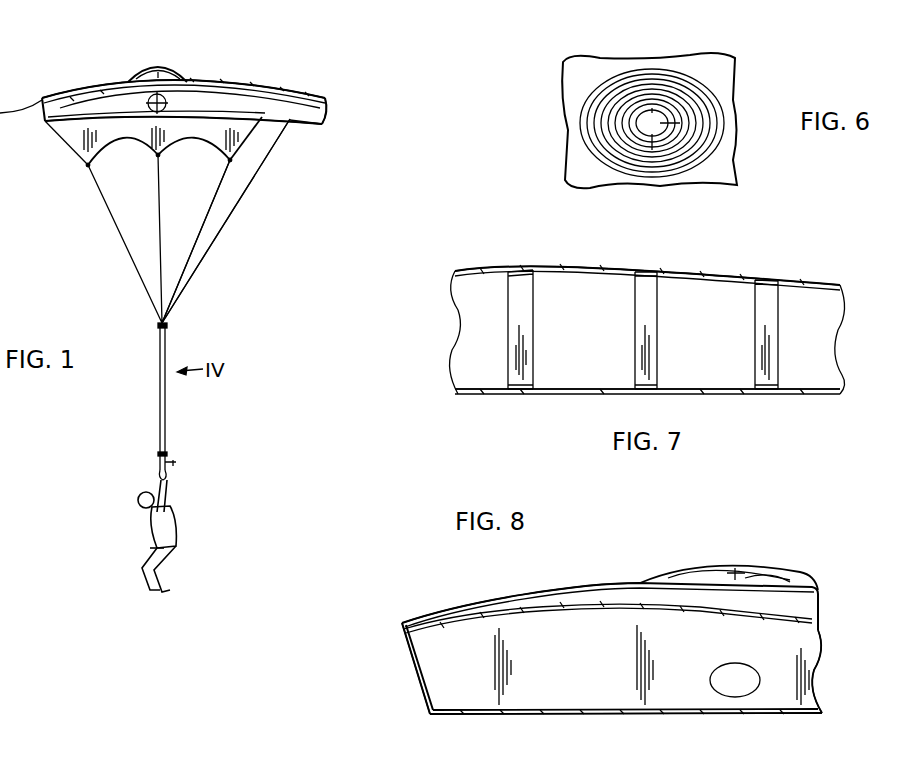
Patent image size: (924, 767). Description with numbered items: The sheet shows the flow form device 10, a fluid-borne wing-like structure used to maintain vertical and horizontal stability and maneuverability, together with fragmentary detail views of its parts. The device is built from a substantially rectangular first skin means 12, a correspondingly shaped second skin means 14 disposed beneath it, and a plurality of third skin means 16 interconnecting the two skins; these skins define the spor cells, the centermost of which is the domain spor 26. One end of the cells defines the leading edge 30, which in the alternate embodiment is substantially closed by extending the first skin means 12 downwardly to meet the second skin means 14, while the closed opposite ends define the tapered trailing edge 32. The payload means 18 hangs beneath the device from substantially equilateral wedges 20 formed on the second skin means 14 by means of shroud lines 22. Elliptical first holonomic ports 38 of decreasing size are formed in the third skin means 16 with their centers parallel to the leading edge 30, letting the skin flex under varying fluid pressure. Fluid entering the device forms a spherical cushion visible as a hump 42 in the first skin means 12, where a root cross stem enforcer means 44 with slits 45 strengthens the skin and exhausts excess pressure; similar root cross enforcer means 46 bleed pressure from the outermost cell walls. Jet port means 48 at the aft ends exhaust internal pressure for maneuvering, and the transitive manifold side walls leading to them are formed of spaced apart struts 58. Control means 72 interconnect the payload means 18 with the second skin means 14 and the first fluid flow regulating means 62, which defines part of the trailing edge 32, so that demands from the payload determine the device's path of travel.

In FIG. 1, the flow form device 10 is at (236, 64).
In FIG. 8, the flow form device 10 is at (628, 568).
In FIG. 1, the first skin means 12 is at (78, 85).
In FIG. 7, the first skin means 12 is at (600, 266).
In FIG. 8, the first skin means 12 is at (503, 600).
In FIG. 1, the second skin means 14 is at (65, 120).
In FIG. 7, the second skin means 14 is at (535, 395).
In FIG. 8, the second skin means 14 is at (604, 715).
In FIG. 6, the third skin means 16 is at (570, 83).
In FIG. 8, the third skin means 16 is at (790, 647).
In FIG. 1, the payload means 18 is at (167, 422).
In FIG. 1, the equilateral wedges 20 is at (146, 138).
In FIG. 1, the shroud lines 22 is at (143, 197).
In FIG. 7, the domain spor 26 is at (480, 310).
In FIG. 8, the leading edge 30 is at (410, 658).
In FIG. 1, the trailing edge 32 is at (324, 123).
In FIG. 6, the first holonomic ports 38 is at (580, 140).
In FIG. 8, the first holonomic ports 38 is at (730, 668).
In FIG. 1, the hump 42 is at (167, 70).
In FIG. 8, the hump 42 is at (672, 578).
In FIG. 8, the root cross stem enforcer means 44 is at (717, 570).
In FIG. 8, the slits 45 is at (745, 578).
In FIG. 1, the root cross enforcer means 46 is at (147, 103).
In FIG. 1, the jet port means 48 is at (327, 103).
In FIG. 7, the struts 58 is at (640, 326).
In FIG. 1, the first fluid flow regulating means 62 is at (293, 126).
In FIG. 1, the control means 72 is at (258, 186).